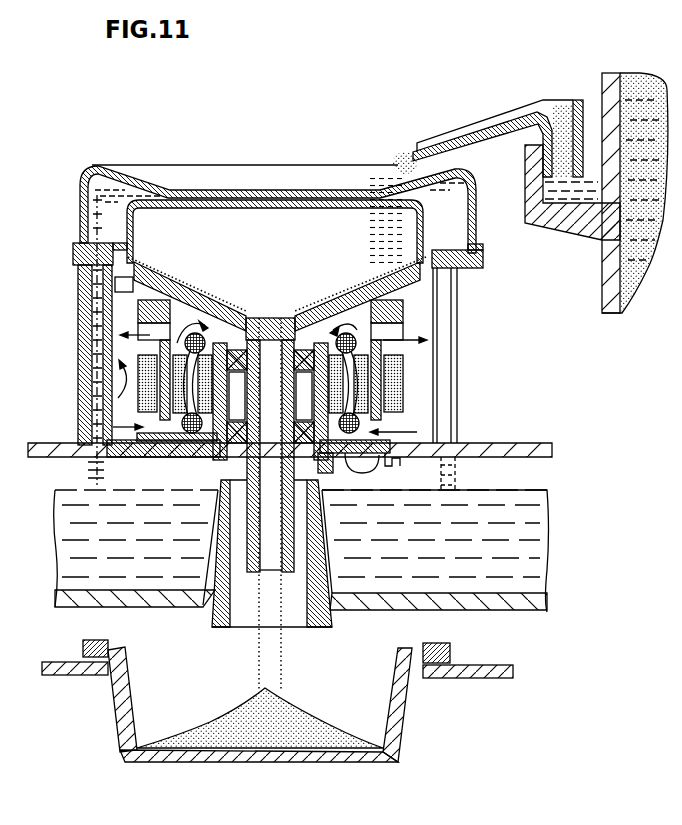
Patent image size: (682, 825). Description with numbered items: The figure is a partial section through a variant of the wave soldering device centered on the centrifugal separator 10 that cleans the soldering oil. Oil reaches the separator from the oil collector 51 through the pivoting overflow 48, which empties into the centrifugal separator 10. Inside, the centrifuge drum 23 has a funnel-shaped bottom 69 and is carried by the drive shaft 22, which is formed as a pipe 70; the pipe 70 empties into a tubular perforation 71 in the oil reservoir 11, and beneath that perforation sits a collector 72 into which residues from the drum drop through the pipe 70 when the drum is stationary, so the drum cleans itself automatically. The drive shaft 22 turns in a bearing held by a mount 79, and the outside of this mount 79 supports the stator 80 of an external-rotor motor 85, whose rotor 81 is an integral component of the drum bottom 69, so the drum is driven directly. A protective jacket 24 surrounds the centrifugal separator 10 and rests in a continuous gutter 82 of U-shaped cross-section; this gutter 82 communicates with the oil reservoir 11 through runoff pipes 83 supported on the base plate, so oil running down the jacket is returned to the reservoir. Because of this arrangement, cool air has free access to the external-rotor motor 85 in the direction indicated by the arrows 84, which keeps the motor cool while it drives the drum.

The centrifugal separator 10 is at (233, 137).
The oil reservoir 11 is at (530, 607).
The drive shaft 22 is at (296, 572).
The centrifuge drum 23 is at (438, 278).
The protective jacket 24 is at (80, 222).
The overflow 48 is at (487, 120).
The oil collector 51 is at (603, 293).
The bottom of the centrifuge drum 69 is at (333, 302).
The pipe 70 is at (272, 337).
The tubular perforation 71 is at (241, 627).
The collector 72 is at (403, 716).
The mount 79 is at (218, 340).
The stator 80 is at (188, 312).
The rotor 81 is at (403, 382).
The gutter 82 is at (485, 268).
The runoff pipes 83 is at (83, 333).
The arrows 84 is at (417, 432).
The external-rotor motor 85 is at (160, 436).